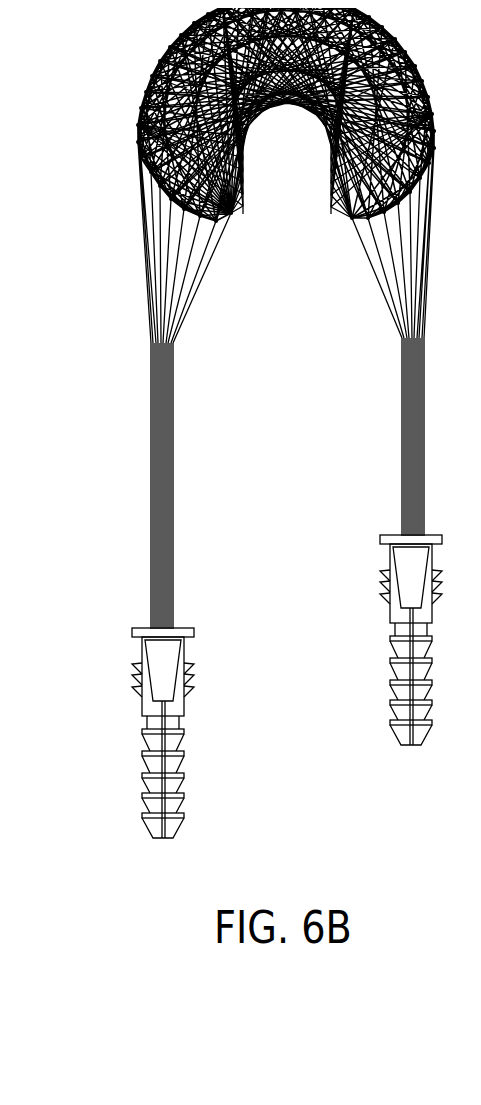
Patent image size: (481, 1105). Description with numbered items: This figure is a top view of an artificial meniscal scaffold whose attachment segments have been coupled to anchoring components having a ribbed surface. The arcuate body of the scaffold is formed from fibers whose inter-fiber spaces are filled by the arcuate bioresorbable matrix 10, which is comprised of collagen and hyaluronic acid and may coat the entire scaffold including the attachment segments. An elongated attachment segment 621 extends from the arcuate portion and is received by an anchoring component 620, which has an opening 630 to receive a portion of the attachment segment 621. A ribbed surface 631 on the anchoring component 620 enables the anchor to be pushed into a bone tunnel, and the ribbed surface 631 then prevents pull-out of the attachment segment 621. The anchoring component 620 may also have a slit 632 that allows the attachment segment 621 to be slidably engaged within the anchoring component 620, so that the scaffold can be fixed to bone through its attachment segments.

The arcuate bioresorbable matrix 10 is at (287, 97).
The anchoring component 620 is at (107, 764).
The attachment segment 621 is at (133, 455).
The opening 630 is at (130, 610).
The ribbed surface 631 is at (178, 736).
The slit 632 is at (153, 825).